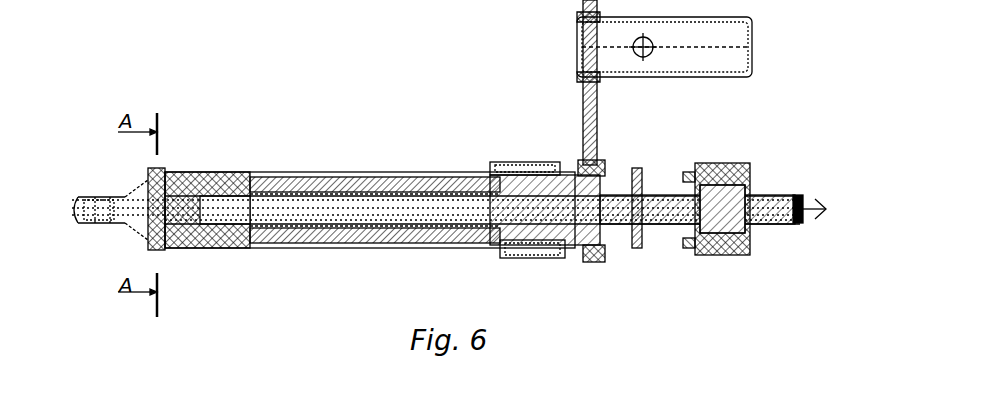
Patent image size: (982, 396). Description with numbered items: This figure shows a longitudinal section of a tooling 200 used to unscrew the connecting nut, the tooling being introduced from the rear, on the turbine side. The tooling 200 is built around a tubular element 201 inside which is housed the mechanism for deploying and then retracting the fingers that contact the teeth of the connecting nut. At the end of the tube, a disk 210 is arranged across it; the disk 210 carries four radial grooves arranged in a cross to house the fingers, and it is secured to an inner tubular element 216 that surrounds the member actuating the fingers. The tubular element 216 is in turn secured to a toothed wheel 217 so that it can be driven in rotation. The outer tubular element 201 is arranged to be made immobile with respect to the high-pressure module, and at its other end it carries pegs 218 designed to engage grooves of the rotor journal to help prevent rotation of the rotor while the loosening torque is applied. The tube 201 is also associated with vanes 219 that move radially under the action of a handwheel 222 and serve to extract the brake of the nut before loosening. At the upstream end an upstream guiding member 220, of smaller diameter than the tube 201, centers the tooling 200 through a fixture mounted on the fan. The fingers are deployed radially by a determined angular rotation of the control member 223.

The tooling 200 is at (413, 78).
The tubular element 201 is at (372, 238).
The disk 210 is at (155, 250).
The tubular element 216 is at (443, 230).
The toothed wheel 217 is at (717, 252).
The pegs 218 is at (297, 176).
The vanes 219 is at (173, 180).
The upstream guiding member 220 is at (84, 208).
The handwheel 222 is at (637, 170).
The control member 223 is at (800, 194).